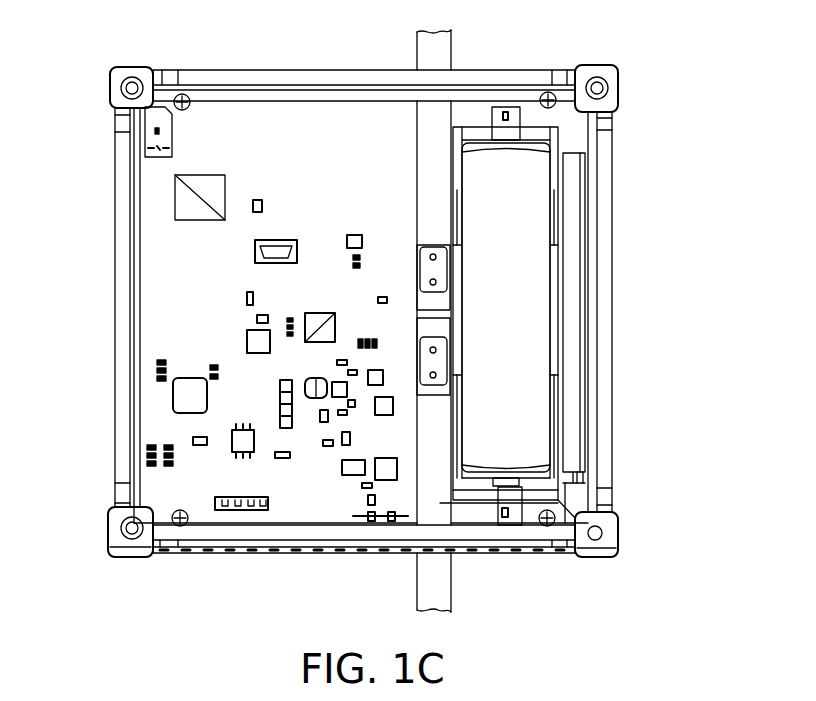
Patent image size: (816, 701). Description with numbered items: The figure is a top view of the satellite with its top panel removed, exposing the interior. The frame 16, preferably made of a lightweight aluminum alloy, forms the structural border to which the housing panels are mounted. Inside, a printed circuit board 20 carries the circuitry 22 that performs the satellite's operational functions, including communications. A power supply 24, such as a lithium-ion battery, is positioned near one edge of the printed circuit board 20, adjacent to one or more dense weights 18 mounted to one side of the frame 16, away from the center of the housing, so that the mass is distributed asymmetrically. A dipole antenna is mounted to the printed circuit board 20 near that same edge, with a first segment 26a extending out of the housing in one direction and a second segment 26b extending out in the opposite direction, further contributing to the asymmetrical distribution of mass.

The frame 16 is at (605, 442).
The dense weight 18 is at (573, 265).
The printed circuit board 20 is at (315, 147).
The circuitry 22 is at (197, 342).
The power supply 24 is at (525, 350).
The first segment 26a is at (437, 53).
The second segment 26b is at (437, 578).